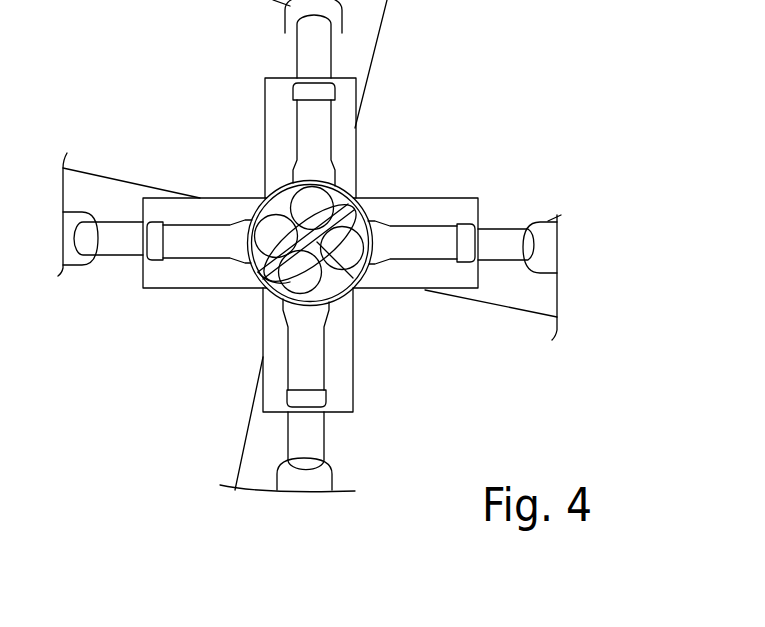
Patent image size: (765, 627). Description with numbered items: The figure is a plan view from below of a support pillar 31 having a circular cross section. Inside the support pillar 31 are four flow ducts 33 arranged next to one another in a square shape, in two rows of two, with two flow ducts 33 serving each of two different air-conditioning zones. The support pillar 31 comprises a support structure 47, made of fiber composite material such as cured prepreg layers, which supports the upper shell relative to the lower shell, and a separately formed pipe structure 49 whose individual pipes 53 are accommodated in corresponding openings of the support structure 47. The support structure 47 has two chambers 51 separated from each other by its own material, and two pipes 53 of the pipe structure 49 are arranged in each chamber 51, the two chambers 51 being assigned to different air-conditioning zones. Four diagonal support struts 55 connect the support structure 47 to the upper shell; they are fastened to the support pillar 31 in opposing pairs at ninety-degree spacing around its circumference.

The support pillar 31 is at (556, 74).
The flow ducts 33 is at (308, 203).
The support structure 47 is at (268, 273).
The pipe structure 49 is at (350, 219).
The chambers 51 is at (333, 283).
The pipes 53 is at (327, 212).
The support struts 55 is at (312, 43).